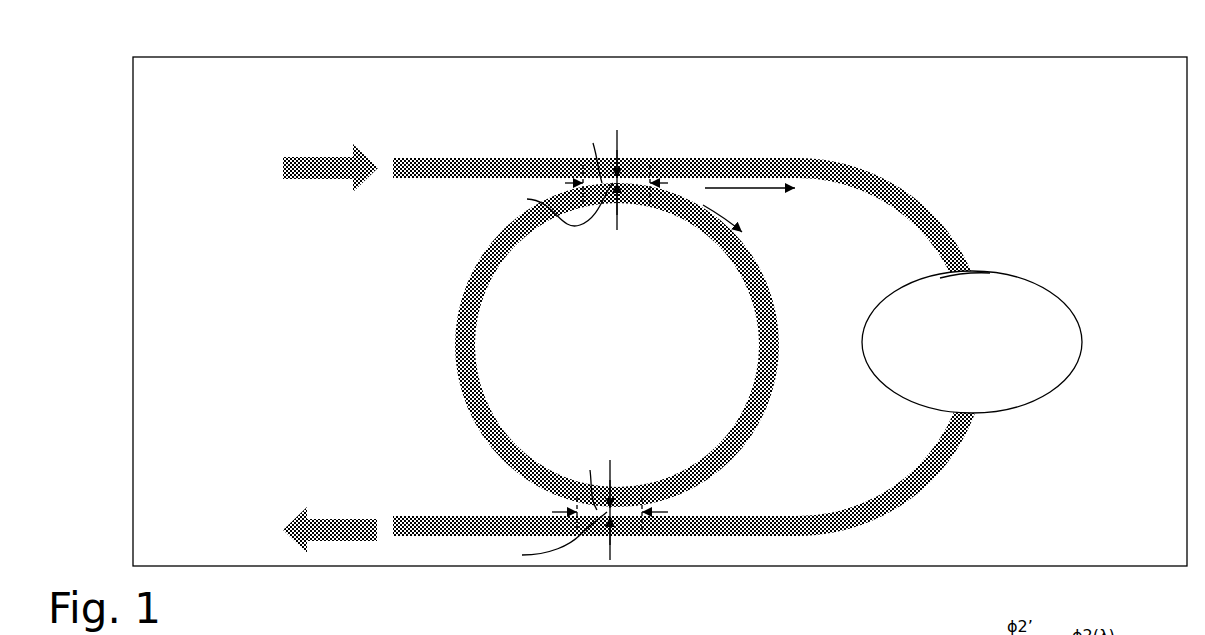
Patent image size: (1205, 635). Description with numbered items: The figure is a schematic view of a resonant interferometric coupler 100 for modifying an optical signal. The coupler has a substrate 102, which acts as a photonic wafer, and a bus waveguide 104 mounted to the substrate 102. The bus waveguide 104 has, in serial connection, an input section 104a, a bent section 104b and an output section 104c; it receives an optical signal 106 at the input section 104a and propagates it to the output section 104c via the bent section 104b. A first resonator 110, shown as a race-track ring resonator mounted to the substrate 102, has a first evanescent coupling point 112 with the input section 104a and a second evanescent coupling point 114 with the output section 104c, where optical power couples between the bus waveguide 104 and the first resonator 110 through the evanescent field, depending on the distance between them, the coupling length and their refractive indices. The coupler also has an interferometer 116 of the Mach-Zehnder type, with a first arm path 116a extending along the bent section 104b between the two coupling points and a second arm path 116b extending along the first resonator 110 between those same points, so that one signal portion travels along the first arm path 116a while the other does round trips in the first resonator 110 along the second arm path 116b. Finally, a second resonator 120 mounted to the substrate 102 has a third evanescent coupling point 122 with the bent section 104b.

The resonant interferometric coupler 100 is at (622, 285).
The substrate 102 is at (132, 242).
The bus waveguide 104 is at (685, 318).
The input section 104a is at (446, 180).
The bent section 104b is at (896, 205).
The output section 104c is at (462, 517).
The optical signal 106 is at (304, 168).
The first resonator 110 is at (617, 345).
The first evanescent coupling point 112 is at (630, 146).
The second evanescent coupling point 114 is at (619, 545).
The interferometer 116 is at (834, 170).
The first arm path 116a is at (752, 186).
The second arm path 116b is at (703, 225).
The second resonator 120 is at (972, 342).
The third evanescent coupling point 122 is at (983, 262).